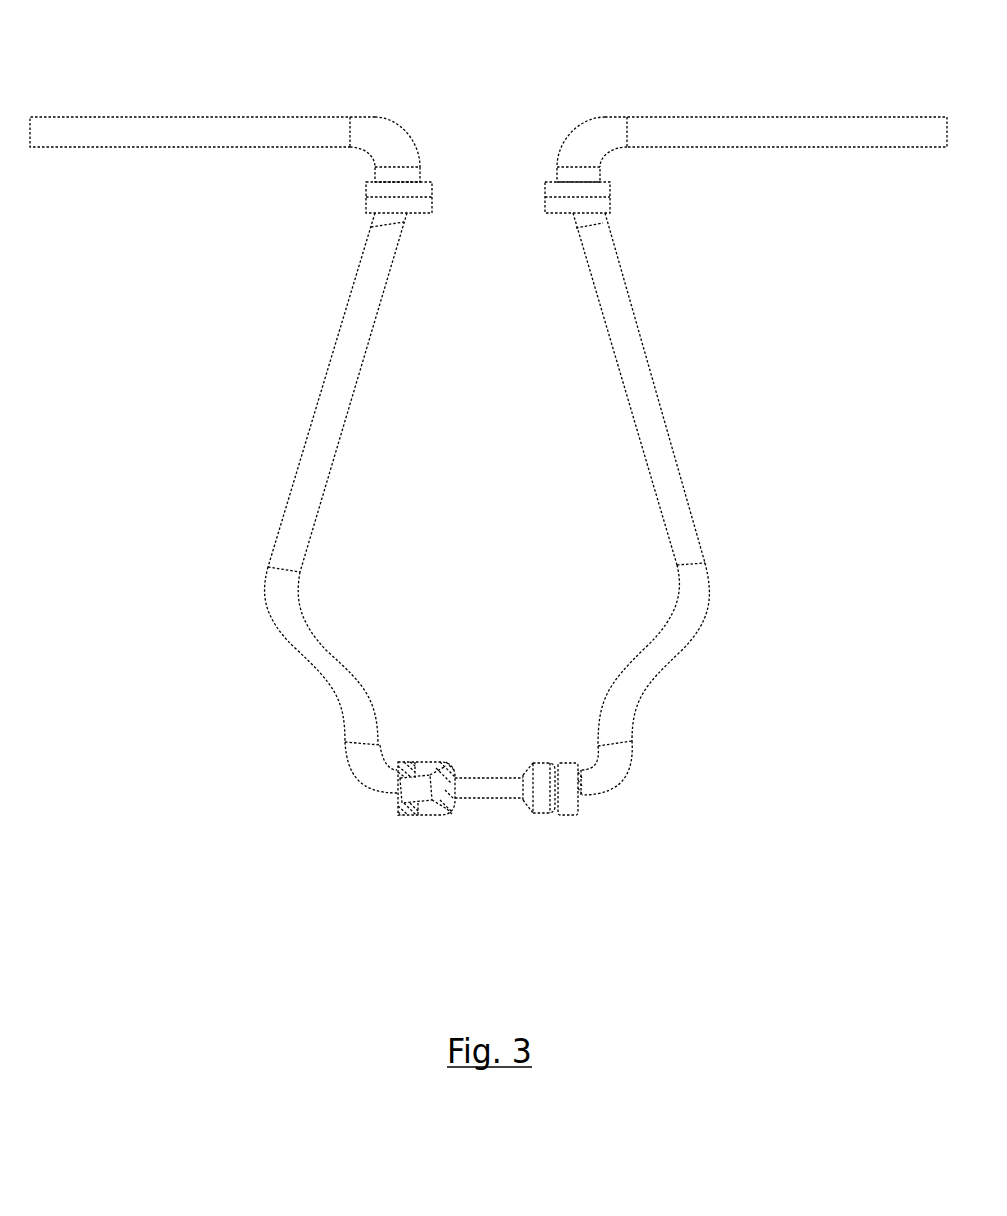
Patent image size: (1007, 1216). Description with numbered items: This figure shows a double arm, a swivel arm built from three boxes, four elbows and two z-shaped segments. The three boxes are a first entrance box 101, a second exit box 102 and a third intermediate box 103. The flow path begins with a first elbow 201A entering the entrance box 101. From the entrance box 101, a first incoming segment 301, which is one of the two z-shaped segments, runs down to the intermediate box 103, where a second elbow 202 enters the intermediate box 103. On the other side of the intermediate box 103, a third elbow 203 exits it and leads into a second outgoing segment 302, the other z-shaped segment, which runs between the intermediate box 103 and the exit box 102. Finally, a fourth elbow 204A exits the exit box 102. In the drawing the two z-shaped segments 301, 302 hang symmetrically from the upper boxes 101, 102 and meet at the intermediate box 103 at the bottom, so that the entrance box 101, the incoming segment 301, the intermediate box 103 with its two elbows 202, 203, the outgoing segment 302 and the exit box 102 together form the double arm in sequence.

The first elbow 201A is at (382, 138).
The fourth elbow 204A is at (591, 138).
The first entrance box 101 is at (382, 203).
The second exit box 102 is at (596, 205).
The first incoming segment 301 is at (308, 653).
The second outgoing segment 302 is at (663, 655).
The second elbow 202 is at (367, 768).
The third elbow 203 is at (607, 770).
The third intermediate box 103 is at (500, 790).